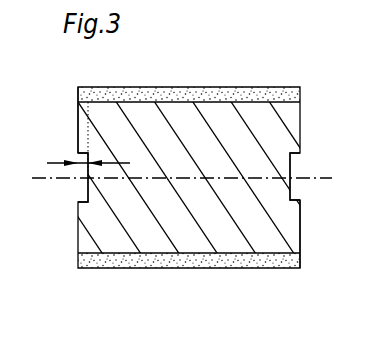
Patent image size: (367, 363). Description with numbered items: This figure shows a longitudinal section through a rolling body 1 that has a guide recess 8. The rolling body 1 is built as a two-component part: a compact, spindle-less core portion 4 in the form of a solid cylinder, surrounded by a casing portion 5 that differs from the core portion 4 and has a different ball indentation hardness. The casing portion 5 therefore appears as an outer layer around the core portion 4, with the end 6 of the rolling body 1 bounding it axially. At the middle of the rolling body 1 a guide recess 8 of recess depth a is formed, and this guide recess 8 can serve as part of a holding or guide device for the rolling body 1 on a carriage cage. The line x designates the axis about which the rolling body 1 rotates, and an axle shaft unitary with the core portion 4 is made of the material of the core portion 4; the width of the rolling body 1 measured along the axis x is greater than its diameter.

The rolling body 1 is at (283, 74).
The core portion 4 is at (175, 235).
The casing portion 5 is at (207, 98).
The end 6 is at (78, 127).
The guide recess 8 is at (88, 188).
The axis x is at (318, 180).
The recess depth a is at (80, 153).